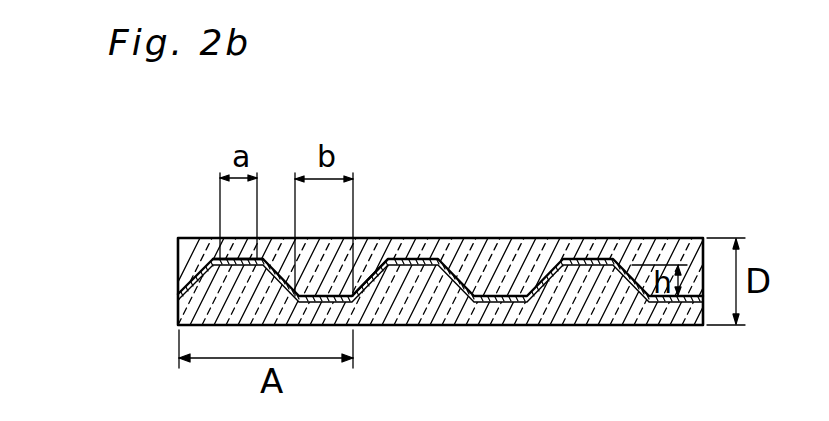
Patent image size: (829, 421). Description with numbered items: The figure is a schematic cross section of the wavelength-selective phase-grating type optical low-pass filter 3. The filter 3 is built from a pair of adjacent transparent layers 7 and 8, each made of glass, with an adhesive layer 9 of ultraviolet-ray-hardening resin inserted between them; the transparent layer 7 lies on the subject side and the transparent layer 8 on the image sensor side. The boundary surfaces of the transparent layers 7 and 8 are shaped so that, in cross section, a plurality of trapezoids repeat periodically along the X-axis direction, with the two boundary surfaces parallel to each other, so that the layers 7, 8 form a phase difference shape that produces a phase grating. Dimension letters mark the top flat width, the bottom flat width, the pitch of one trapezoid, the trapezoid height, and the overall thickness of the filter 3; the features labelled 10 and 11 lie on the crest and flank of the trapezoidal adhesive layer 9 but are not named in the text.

The wavelength-selective phase-grating type optical low-pass filter 3 is at (442, 100).
The transparent layer 7 is at (178, 250).
The transparent layer 8 is at (193, 314).
The adhesive layer 9 is at (195, 299).
The crest of corrugation 10 is at (220, 237).
The flank of corrugation 11 is at (352, 285).